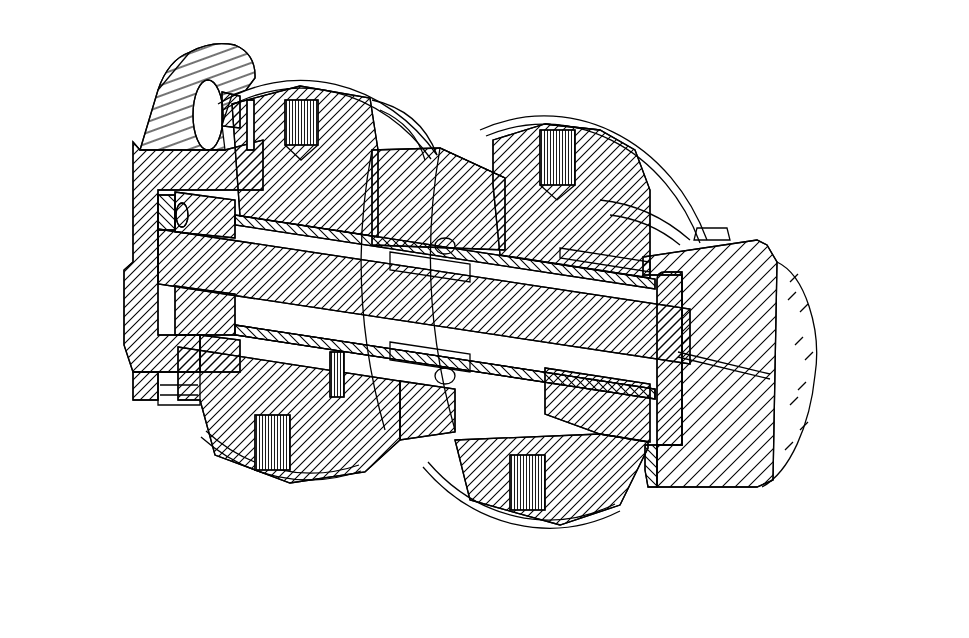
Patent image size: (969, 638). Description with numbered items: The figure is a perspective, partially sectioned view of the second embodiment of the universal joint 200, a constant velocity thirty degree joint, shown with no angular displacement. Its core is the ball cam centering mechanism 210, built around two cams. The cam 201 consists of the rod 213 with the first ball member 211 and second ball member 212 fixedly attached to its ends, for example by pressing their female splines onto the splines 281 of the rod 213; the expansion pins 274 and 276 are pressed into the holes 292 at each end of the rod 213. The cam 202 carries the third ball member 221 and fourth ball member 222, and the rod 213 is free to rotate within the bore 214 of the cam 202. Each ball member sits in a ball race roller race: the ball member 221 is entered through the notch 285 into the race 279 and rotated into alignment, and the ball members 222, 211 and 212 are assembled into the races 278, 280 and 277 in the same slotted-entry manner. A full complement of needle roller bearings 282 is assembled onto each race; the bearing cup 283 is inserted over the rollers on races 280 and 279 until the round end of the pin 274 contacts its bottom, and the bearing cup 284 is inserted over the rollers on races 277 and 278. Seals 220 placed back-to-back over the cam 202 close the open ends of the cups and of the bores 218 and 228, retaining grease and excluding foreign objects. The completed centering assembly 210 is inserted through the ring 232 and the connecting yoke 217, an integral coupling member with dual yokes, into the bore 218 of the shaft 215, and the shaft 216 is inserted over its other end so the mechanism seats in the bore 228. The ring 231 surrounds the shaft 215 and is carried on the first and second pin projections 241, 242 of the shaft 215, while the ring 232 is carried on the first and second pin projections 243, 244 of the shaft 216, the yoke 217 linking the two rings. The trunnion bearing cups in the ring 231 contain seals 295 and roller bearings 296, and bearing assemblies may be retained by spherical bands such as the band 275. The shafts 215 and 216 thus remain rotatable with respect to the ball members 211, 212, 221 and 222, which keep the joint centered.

The universal joint 200 is at (584, 62).
The cam 201 is at (614, 160).
The cam 202 is at (400, 412).
The ball cam centering mechanism 210 is at (474, 42).
The first ball member 211 is at (205, 290).
The second ball member 212 is at (770, 415).
The rod 213 is at (728, 233).
The bore in cam 202 214 is at (178, 405).
The shaft 215 is at (150, 170).
The shaft 216 is at (738, 474).
The connecting yoke 217 is at (445, 187).
The bore in shaft 215 218 is at (140, 403).
The seals 220 is at (427, 185).
The third ball member 221 is at (228, 454).
The fourth ball member 222 is at (412, 400).
The bore in shaft 216 228 is at (648, 458).
The ring 231 is at (392, 122).
The ring 232 is at (648, 167).
The first pin projection of shaft 215 241 is at (252, 155).
The second pin projection of shaft 215 242 is at (187, 414).
The first pin projection of shaft 216 243 is at (645, 193).
The second pin projection of shaft 216 244 is at (598, 495).
The expansion pin 274 is at (153, 234).
The spherical band 275 is at (267, 478).
The expansion pin 276 is at (758, 277).
The ball race roller race 277 is at (577, 477).
The ball race roller race 278 is at (465, 420).
The ball race roller race 279 is at (300, 468).
The ball race roller race 280 is at (150, 344).
The splines on rod 213 281 is at (153, 205).
The needle roller bearings 282 is at (172, 100).
The bearing cup 283 is at (150, 302).
The bearing cup 284 is at (773, 449).
The notch 285 is at (650, 220).
The holes 292 is at (143, 261).
The seals 295 is at (252, 155).
The roller bearings 296 is at (248, 103).